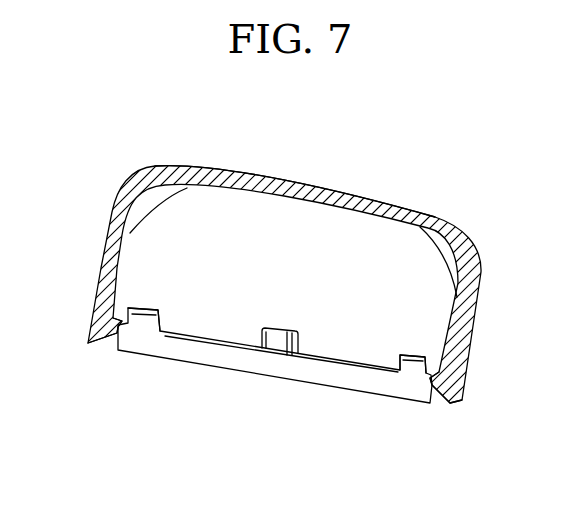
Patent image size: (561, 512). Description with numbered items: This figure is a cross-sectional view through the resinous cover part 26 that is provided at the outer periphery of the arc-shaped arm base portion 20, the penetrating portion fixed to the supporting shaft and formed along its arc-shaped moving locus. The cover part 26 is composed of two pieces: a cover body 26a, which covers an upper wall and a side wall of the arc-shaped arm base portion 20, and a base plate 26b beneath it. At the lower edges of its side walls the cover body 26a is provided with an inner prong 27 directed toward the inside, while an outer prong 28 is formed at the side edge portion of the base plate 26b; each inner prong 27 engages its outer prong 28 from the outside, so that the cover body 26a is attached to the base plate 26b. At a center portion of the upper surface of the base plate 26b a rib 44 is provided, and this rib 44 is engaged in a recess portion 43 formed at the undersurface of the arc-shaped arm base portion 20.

The cover part 26 is at (133, 180).
The cover body 26a is at (370, 193).
The base plate 26b is at (180, 362).
The inner prong 27 is at (104, 348).
The outer prong 28 is at (126, 306).
The recess portion 43 is at (287, 350).
The rib 44 is at (277, 340).
The arc-shaped arm base portion 20 is at (352, 317).